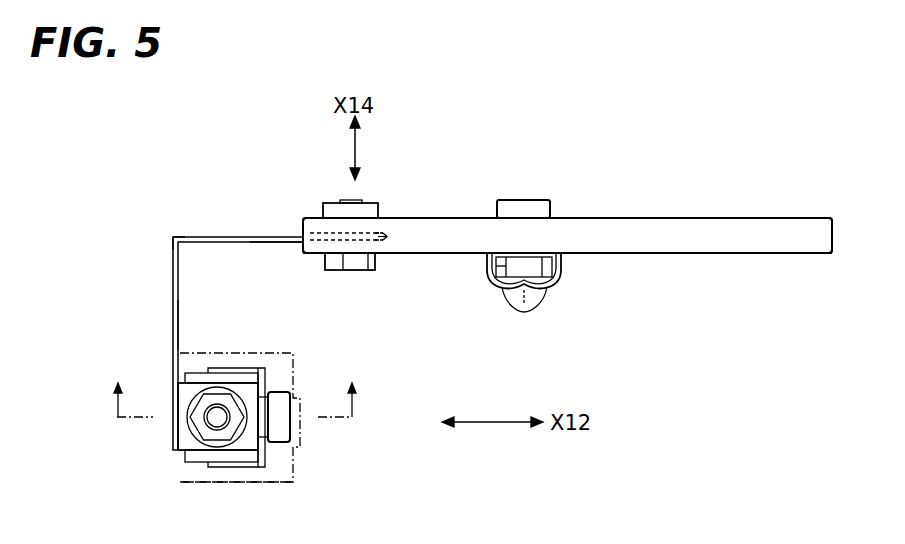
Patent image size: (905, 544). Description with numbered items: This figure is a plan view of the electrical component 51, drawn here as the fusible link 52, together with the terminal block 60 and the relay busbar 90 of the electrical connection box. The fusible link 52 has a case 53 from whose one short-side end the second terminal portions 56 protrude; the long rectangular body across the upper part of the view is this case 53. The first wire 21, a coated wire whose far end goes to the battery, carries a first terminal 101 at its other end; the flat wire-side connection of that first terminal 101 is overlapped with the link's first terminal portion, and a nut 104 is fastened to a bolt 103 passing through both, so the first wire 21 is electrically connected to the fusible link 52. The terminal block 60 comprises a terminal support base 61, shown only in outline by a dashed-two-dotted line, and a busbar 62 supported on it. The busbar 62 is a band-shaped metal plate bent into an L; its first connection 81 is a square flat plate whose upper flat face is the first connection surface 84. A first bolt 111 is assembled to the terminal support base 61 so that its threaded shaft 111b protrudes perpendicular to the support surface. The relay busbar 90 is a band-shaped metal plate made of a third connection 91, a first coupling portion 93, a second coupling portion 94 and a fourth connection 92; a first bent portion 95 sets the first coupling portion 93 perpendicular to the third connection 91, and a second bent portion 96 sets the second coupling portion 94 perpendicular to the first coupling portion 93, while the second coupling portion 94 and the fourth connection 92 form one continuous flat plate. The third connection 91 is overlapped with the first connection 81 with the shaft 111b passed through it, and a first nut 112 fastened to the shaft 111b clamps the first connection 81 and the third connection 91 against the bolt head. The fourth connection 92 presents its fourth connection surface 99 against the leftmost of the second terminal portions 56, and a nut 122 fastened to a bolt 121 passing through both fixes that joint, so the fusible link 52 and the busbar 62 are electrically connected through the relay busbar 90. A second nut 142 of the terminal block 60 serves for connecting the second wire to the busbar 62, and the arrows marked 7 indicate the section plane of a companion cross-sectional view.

The section line 7 is at (237, 386).
The first wire 21 is at (540, 300).
The rail member 51 is at (753, 217).
The fusible link 52 is at (567, 235).
The case 53 is at (785, 243).
The second terminal portions 56 is at (380, 235).
The terminal block 60 is at (285, 355).
The terminal support base 61 is at (302, 478).
The busbar 62 is at (242, 373).
The first connection 81 is at (195, 378).
The first connection surface 84 is at (240, 462).
The relay busbar 90 is at (230, 237).
The third connection 91 is at (256, 393).
The fourth connection 92 is at (383, 248).
The first coupling portion 93 is at (173, 323).
The second coupling portion 94 is at (257, 243).
The first bent portion 95 is at (174, 400).
The second bent portion 96 is at (173, 238).
The fourth connection surface 99 is at (340, 228).
The first terminal 101 is at (560, 278).
The bolt 103 is at (493, 270).
The nut 104 is at (537, 205).
The first bolt 111 is at (203, 425).
The shaft 111b is at (215, 424).
The first nut 112 is at (222, 395).
The bolt 121 is at (345, 270).
The nut 122 is at (322, 210).
The second nut 142 is at (288, 432).